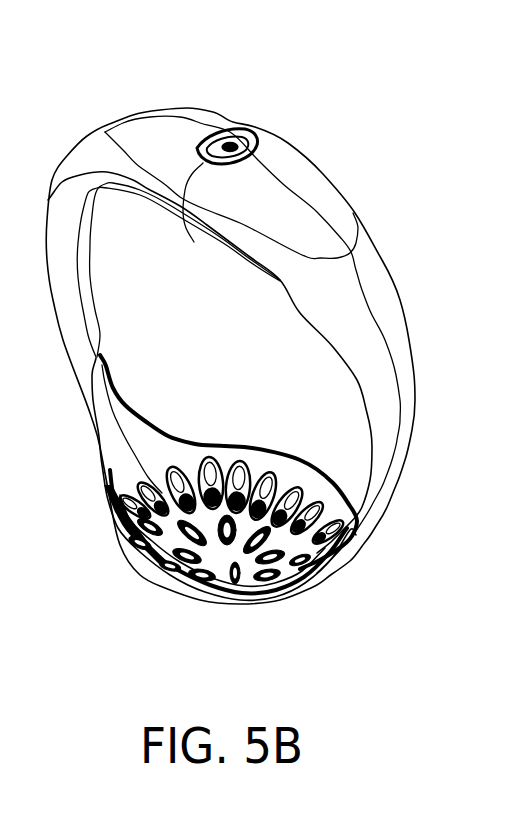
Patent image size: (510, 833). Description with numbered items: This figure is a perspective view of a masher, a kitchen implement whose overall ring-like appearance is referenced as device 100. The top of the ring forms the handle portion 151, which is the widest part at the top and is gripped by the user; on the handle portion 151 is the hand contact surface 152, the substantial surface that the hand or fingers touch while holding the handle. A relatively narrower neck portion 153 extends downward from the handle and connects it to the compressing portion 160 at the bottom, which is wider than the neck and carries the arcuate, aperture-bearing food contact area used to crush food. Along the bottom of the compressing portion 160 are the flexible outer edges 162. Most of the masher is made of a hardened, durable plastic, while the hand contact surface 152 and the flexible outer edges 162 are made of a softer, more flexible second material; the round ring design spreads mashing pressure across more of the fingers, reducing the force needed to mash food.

The wearable device 100 is at (66, 116).
The handle portion 151 is at (200, 220).
The hand contact surface 152 is at (193, 118).
The neck portion 153 is at (90, 257).
The compressing portion 160 is at (308, 587).
The flexible outer edges 162 is at (288, 462).